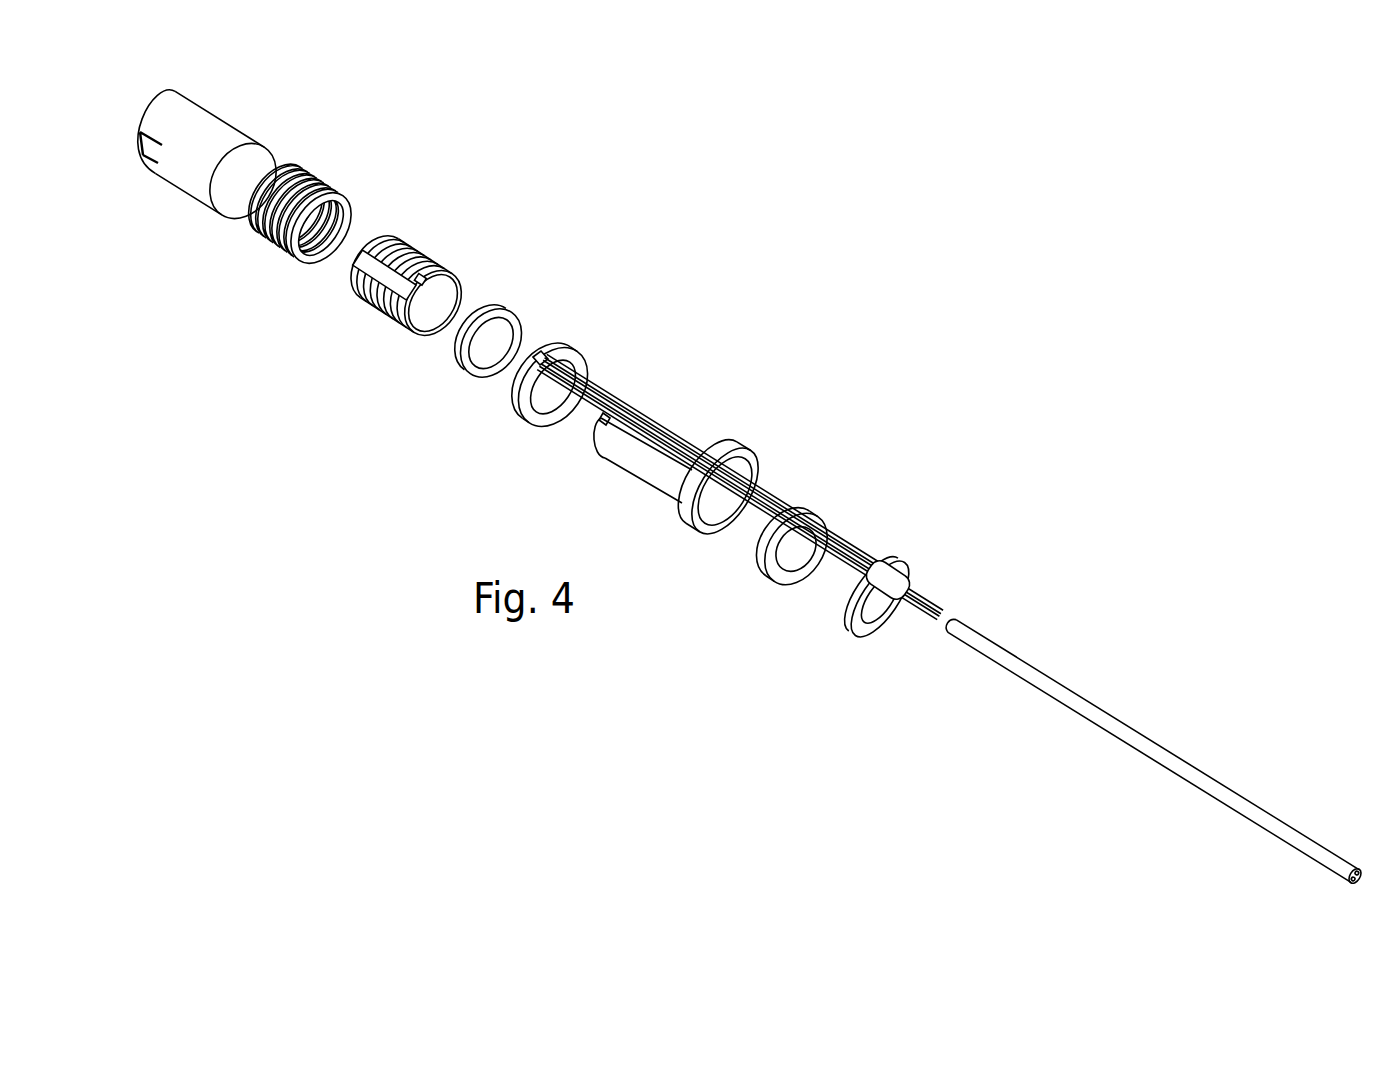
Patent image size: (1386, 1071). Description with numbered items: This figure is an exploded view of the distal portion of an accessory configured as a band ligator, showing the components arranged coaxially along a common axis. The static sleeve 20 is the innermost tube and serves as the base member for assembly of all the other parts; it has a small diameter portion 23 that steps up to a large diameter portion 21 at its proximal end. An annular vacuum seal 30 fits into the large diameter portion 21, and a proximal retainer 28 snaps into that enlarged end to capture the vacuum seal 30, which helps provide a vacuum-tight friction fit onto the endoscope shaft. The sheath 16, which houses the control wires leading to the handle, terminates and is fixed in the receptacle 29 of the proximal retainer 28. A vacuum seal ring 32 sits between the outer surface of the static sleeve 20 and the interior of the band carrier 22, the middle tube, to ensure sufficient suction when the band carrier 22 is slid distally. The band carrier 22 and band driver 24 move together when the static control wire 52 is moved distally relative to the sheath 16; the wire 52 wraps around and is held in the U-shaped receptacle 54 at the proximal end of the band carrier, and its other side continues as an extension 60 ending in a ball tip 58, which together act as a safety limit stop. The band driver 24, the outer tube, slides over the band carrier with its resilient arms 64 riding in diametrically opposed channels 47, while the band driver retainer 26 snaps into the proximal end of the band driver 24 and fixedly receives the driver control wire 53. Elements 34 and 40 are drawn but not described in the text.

The sheath 16 is at (1065, 703).
The static sleeve 20 is at (740, 458).
The large diameter portion 21 is at (738, 446).
The band carrier 22 is at (377, 271).
The small diameter portion 23 is at (702, 480).
The band driver 24 is at (187, 148).
The band driver retainer 26 is at (549, 358).
The proximal retainer 28 is at (884, 606).
The receptacle 29 is at (907, 580).
The annular vacuum seal 30 is at (770, 578).
The vacuum seal ring 32 is at (470, 367).
The coil spring 34 is at (310, 178).
The ribs 40 is at (394, 278).
The channels 47 is at (384, 275).
The static control wire 52 is at (617, 391).
The driver control wire 53 is at (597, 378).
The U-shaped receptacle 54 is at (420, 279).
The ball tip 58 is at (606, 423).
The extension 60 is at (541, 352).
The resilient arms 64 is at (152, 160).